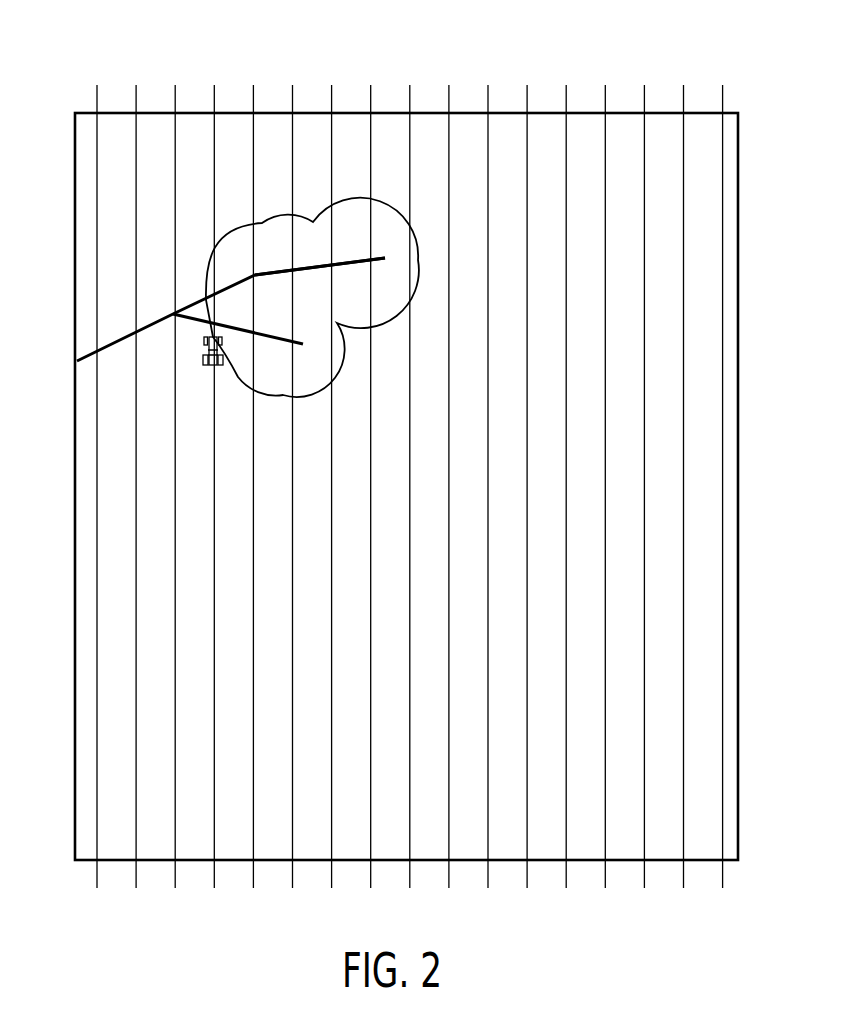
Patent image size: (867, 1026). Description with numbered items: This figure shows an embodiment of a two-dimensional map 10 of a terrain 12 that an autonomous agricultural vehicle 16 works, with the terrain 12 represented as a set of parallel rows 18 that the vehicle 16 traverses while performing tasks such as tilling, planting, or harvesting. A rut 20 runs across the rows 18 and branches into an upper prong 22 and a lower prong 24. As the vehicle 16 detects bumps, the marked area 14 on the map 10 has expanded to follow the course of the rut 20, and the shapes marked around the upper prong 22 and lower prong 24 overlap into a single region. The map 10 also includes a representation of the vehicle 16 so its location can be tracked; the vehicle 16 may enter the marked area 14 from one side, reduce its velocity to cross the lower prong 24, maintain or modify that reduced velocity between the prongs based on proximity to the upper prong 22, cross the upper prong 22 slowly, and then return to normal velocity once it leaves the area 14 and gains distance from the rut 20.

The two-dimensional map 10 is at (703, 112).
The terrain 12 is at (699, 272).
The marked area 14 is at (248, 226).
The vehicle 16 is at (207, 360).
The rows 18 is at (175, 100).
The rut 20 is at (211, 336).
The upper prong 22 is at (320, 262).
The lower prong 24 is at (240, 325).